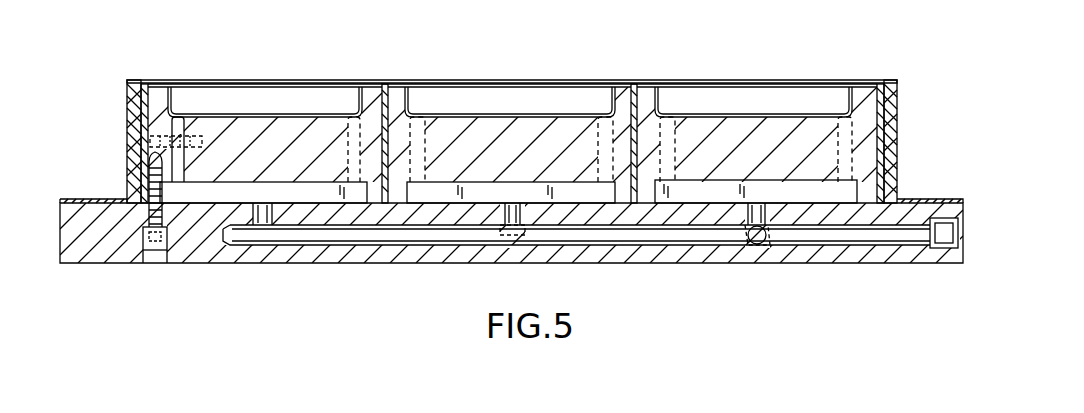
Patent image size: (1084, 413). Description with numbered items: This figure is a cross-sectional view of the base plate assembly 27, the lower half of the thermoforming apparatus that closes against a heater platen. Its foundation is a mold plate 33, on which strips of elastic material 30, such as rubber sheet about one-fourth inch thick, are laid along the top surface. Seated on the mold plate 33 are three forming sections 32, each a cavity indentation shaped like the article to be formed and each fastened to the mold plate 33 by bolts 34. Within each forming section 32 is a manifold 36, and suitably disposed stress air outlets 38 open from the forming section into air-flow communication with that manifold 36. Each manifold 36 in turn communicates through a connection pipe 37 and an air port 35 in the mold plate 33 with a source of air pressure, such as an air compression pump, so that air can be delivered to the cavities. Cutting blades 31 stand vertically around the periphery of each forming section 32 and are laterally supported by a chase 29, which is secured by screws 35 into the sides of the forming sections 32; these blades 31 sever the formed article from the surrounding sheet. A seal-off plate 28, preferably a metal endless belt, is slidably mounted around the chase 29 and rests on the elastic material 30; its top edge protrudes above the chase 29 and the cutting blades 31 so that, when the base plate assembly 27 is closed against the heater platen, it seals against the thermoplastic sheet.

The base plate assembly 27 is at (320, 292).
The seal-off plate 28 is at (127, 89).
The chase 29 is at (146, 112).
The elastic material 30 is at (943, 200).
The cutting blades 31 is at (388, 92).
The forming sections 32 is at (262, 140).
The mold plate 33 is at (840, 256).
The bolts 34 is at (165, 220).
The air port 35 is at (128, 163).
The manifold 36 is at (342, 187).
The connection pipe 37 is at (520, 226).
The stress air outlets 38 is at (345, 112).